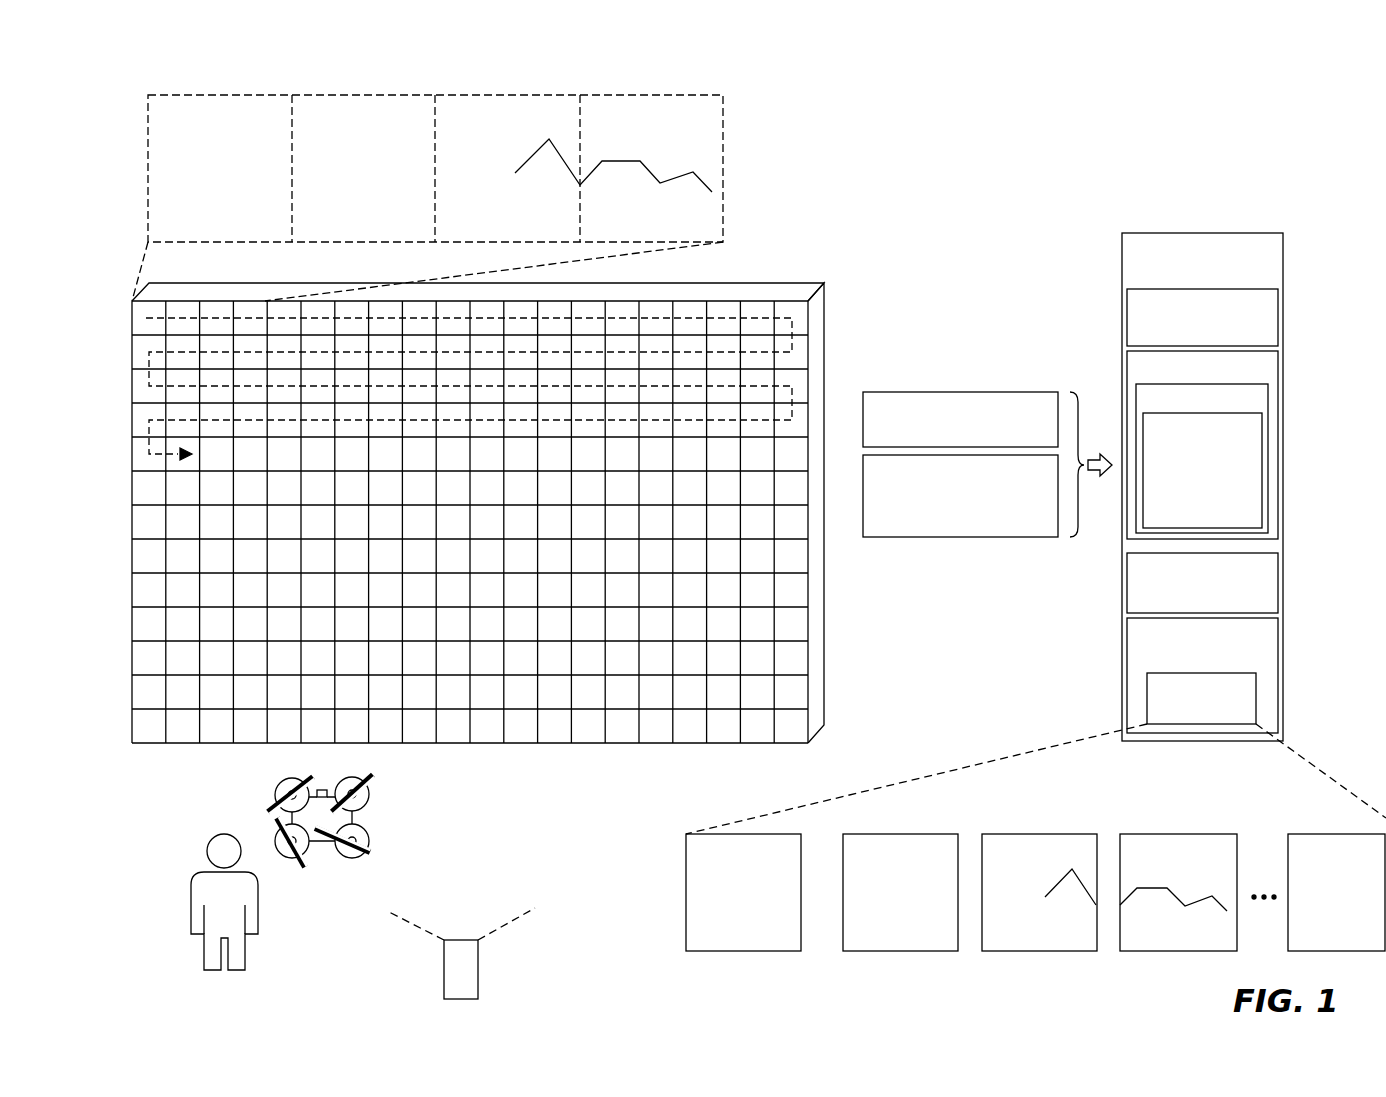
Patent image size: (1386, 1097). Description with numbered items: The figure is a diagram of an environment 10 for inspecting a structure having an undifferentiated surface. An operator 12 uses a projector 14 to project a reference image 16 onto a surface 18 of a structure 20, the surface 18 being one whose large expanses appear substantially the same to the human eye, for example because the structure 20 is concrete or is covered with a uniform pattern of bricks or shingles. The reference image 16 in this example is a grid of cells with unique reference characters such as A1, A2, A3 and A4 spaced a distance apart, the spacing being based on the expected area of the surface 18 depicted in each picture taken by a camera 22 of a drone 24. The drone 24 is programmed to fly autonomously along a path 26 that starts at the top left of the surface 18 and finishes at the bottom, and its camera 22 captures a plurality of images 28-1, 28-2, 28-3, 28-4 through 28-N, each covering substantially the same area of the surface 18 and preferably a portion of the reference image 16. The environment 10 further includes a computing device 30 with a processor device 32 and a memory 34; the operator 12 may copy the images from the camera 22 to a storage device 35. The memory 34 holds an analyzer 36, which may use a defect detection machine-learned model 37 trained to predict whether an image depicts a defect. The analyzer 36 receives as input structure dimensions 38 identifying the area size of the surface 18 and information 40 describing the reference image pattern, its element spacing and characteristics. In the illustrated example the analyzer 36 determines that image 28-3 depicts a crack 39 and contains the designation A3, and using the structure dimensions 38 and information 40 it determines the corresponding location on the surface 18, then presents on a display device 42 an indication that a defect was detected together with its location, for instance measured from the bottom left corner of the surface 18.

The environment 10 is at (1287, 111).
The operator 12 is at (190, 890).
The projector 14 is at (443, 977).
The reference image 16 is at (172, 210).
The surface 18 is at (802, 358).
The structure 20 is at (787, 284).
The camera 22 is at (323, 788).
The drone 24 is at (260, 791).
The path 26 is at (186, 315).
The image 28-1 is at (758, 952).
The image 28-2 is at (903, 952).
The image 28-3 is at (1040, 952).
The image 28-4 is at (1165, 952).
The image 28-N is at (1360, 952).
The computing device 30 is at (1284, 259).
The processor device 32 is at (1279, 320).
The memory 34 is at (1279, 366).
The storage device 35 is at (1279, 640).
The analyzer 36 is at (1269, 403).
The defect detection machine-learned model 37 is at (1263, 468).
The structure dimensions 38 is at (948, 392).
The crack 39 is at (1060, 881).
The information 40 is at (950, 537).
The display device 42 is at (1279, 586).